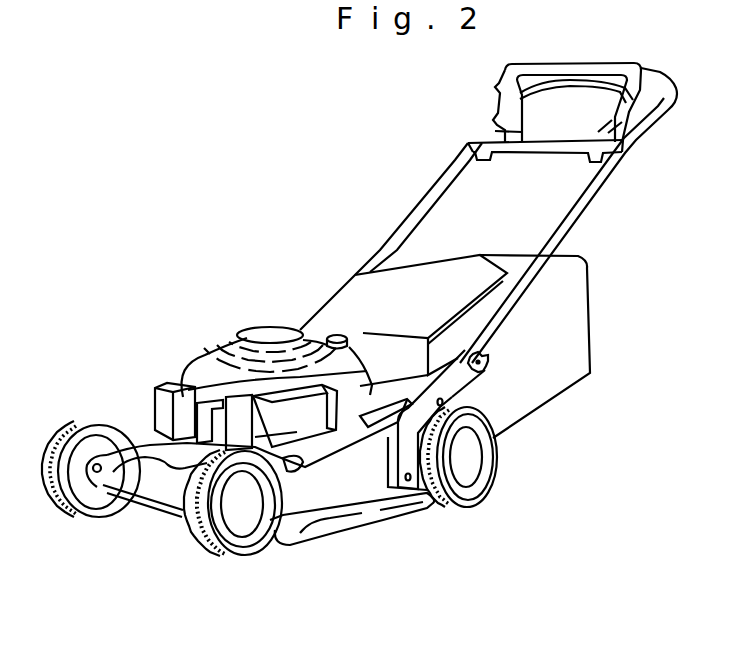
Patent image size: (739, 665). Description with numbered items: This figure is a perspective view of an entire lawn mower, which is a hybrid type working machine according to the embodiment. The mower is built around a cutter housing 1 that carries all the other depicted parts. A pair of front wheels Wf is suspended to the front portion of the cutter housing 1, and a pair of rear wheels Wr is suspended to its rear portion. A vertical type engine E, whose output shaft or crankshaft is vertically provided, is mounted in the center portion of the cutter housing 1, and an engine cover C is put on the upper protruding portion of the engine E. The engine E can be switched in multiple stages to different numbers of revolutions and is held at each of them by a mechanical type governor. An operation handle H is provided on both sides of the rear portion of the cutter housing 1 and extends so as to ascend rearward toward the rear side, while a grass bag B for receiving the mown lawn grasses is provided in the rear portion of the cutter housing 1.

The cutter housing 1 is at (345, 488).
The operation handle H is at (572, 221).
The grass bag B is at (552, 380).
The vertical type engine E is at (250, 346).
The engine cover C is at (260, 330).
The front wheels Wf is at (78, 418).
The rear wheels Wr is at (470, 505).